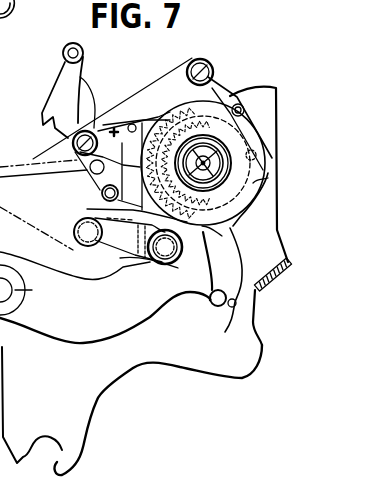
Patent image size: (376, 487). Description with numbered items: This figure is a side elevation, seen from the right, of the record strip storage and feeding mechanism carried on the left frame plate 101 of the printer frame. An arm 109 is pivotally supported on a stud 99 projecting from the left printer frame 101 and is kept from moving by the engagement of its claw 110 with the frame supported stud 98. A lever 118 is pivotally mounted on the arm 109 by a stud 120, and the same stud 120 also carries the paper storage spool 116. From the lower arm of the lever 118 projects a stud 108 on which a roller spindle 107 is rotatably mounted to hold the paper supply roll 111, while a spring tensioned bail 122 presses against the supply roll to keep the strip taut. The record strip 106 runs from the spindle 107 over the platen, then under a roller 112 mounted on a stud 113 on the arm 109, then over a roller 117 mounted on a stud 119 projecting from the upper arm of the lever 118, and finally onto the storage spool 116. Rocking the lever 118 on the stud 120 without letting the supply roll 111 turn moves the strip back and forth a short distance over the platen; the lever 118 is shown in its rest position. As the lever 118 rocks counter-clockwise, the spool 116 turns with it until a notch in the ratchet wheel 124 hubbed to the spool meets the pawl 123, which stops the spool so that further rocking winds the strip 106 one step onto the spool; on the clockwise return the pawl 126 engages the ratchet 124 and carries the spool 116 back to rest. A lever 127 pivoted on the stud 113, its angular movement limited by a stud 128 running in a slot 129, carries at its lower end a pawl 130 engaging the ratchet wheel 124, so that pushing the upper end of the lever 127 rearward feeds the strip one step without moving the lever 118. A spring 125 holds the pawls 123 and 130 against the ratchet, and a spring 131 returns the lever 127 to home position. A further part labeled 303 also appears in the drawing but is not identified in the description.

The frame supported stud 98 is at (214, 305).
The stud 99 is at (30, 290).
The left frame plate 101 is at (90, 404).
The record strip 106 is at (160, 92).
The roller spindle 107 is at (178, 268).
The stud 108 is at (183, 257).
The arm 109 is at (72, 333).
The claw 110 is at (224, 290).
The paper supply roll 111 is at (157, 266).
The roller 112 is at (72, 142).
The stud 113 is at (78, 108).
The paper storage spool 116 is at (268, 163).
The roller 117 is at (207, 58).
The lever 118 is at (222, 236).
The stud 119 is at (190, 58).
The stud 120 is at (232, 222).
The spring tensioned bail 122 is at (107, 250).
The pawl 123 is at (117, 125).
The ratchet wheel 124 is at (197, 103).
The spring 125 is at (84, 126).
The pawl 126 is at (253, 124).
The lever 127 is at (96, 98).
The stud 128 is at (90, 166).
The slot 129 is at (101, 191).
The pawl 130 is at (268, 178).
The spring 131 is at (87, 209).
The stop member 303 is at (276, 283).